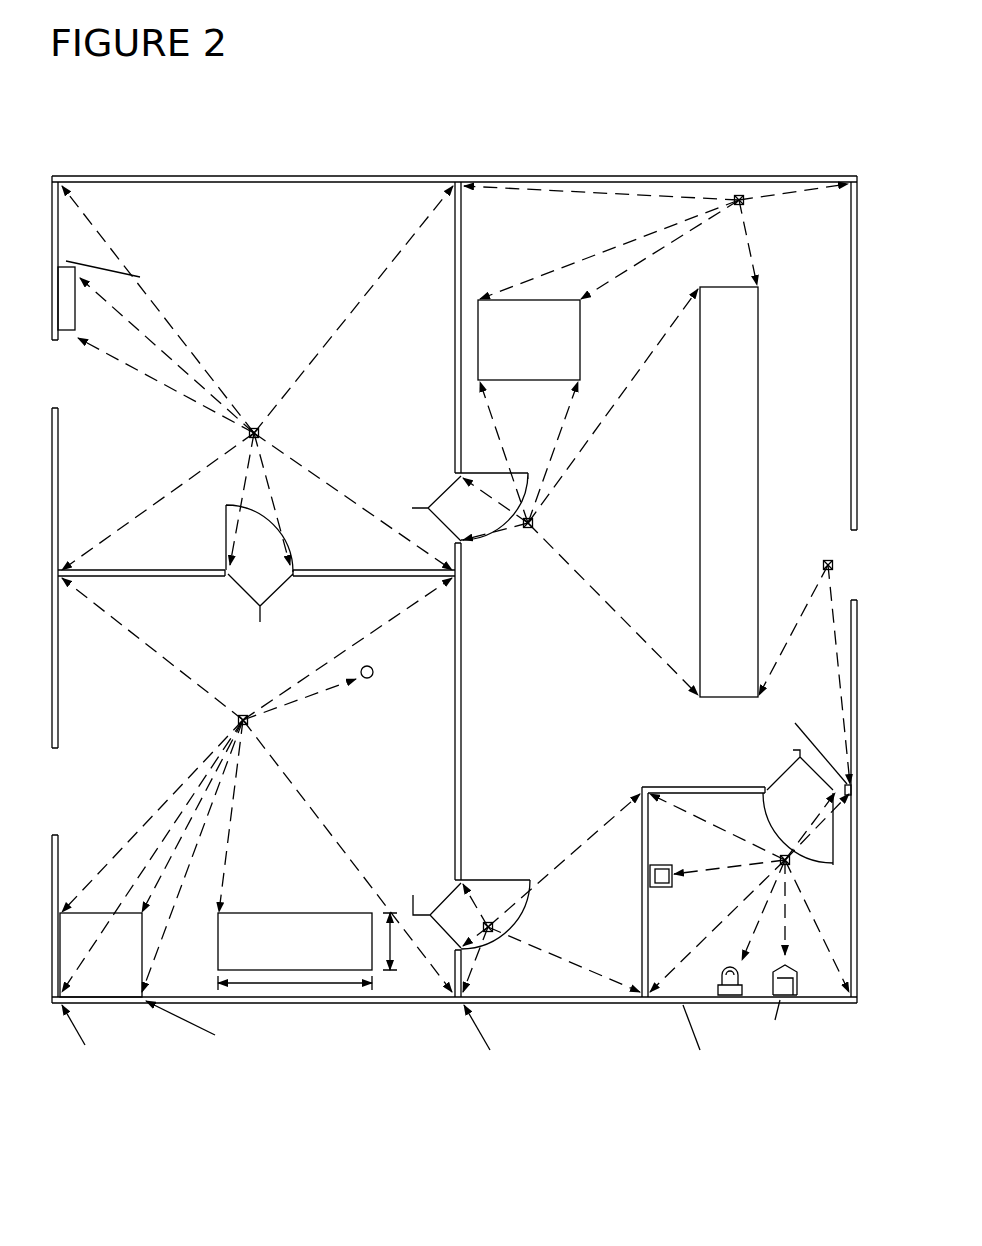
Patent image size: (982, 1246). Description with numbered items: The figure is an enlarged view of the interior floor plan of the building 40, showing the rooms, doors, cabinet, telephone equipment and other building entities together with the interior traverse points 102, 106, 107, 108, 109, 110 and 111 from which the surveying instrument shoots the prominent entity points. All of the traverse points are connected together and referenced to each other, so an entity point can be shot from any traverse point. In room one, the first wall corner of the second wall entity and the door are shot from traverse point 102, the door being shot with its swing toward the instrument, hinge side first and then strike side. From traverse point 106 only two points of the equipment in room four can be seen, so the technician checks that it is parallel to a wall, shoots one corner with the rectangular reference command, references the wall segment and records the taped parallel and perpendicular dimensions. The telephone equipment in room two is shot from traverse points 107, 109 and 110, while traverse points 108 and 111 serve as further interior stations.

The building floor plan 40 is at (610, 177).
The traverse point 102 is at (262, 433).
The traverse point 106 is at (250, 724).
The traverse point 107 is at (536, 521).
The traverse point 108 is at (496, 926).
The traverse point 109 is at (741, 195).
The traverse point 110 is at (824, 560).
The traverse point 111 is at (749, 892).